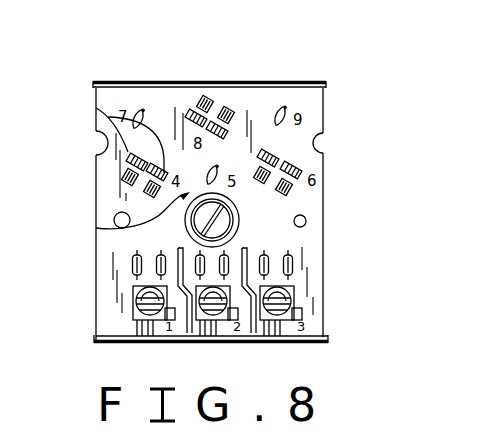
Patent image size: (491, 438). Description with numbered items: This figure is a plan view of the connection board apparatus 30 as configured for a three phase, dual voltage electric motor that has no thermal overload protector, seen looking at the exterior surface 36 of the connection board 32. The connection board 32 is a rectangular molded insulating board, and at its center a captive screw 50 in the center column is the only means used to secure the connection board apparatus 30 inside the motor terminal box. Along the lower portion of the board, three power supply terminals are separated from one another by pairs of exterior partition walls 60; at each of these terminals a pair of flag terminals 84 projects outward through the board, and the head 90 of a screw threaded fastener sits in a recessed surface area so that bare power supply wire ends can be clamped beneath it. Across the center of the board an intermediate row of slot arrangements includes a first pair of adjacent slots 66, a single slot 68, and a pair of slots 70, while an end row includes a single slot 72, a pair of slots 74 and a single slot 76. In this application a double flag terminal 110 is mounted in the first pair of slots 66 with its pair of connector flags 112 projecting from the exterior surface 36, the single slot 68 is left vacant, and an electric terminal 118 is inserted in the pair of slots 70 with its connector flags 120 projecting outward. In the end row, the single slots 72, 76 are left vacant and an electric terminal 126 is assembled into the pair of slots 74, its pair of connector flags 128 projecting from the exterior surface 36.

The connection board apparatus 30 is at (352, 74).
The connection board 32 is at (107, 205).
The exterior surface 36 is at (310, 209).
The screw 50 is at (223, 223).
The exterior partition walls 60 is at (188, 340).
The first pair of adjacent slots 66 is at (104, 181).
The single slot 68 is at (113, 223).
The pair of slots 70 is at (314, 155).
The single slot 72 is at (136, 85).
The pair of slots 74 is at (226, 86).
The single slot 76 is at (304, 84).
The flag terminals 84 is at (124, 263).
The head 90 is at (125, 296).
The double flag terminal 110 is at (100, 160).
The connector flags 112 is at (110, 119).
The electric terminal 118 is at (325, 169).
The connector flags 120 is at (277, 158).
The electric terminal 126 is at (195, 85).
The connector flags 128 is at (187, 113).